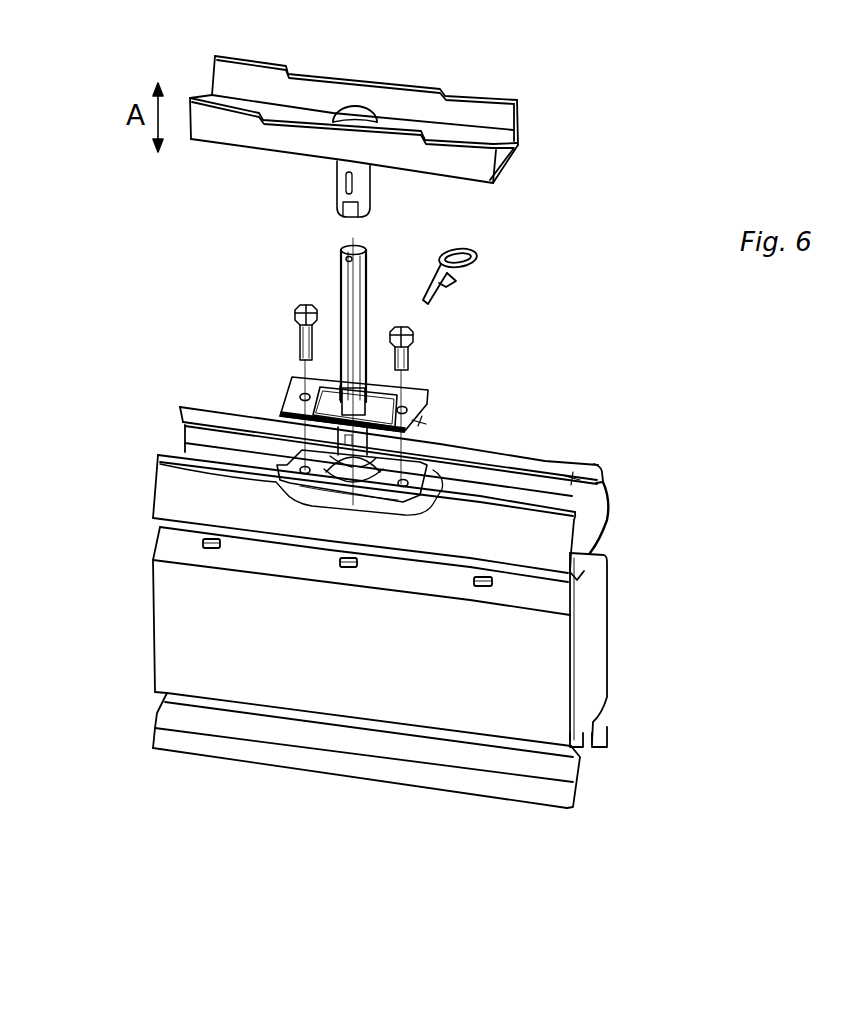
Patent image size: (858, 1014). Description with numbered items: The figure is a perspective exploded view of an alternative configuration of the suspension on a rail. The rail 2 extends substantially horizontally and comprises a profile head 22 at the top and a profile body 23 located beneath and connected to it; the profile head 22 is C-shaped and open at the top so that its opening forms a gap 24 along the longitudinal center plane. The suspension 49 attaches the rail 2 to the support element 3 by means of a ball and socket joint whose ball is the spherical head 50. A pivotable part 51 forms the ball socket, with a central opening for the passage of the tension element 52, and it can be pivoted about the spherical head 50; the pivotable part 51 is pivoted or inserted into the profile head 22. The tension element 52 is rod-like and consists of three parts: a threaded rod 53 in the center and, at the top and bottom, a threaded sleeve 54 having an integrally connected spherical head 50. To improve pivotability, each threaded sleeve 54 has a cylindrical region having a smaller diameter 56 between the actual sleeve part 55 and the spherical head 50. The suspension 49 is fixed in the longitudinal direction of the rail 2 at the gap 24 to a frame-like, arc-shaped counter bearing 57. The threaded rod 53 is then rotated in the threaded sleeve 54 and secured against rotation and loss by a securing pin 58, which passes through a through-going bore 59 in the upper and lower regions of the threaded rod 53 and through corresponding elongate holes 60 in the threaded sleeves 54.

The rail 2 is at (657, 577).
The support element 3 is at (567, 96).
The profile head 22 is at (642, 482).
The profile body 23 is at (672, 650).
The gap 24 is at (587, 462).
The suspension 49 is at (505, 320).
The spherical head 50 is at (375, 106).
The pivotable part 51 is at (415, 465).
The tension element 52 is at (316, 279).
The threaded rod 53 is at (373, 348).
The threaded sleeve 54 is at (370, 399).
The sleeve part 55 is at (250, 413).
The region having a smaller diameter 56 is at (323, 462).
The counter bearing 57 is at (300, 380).
The securing pin 58 is at (494, 254).
The bore 59 is at (340, 257).
The elongate hole 60 is at (380, 181).